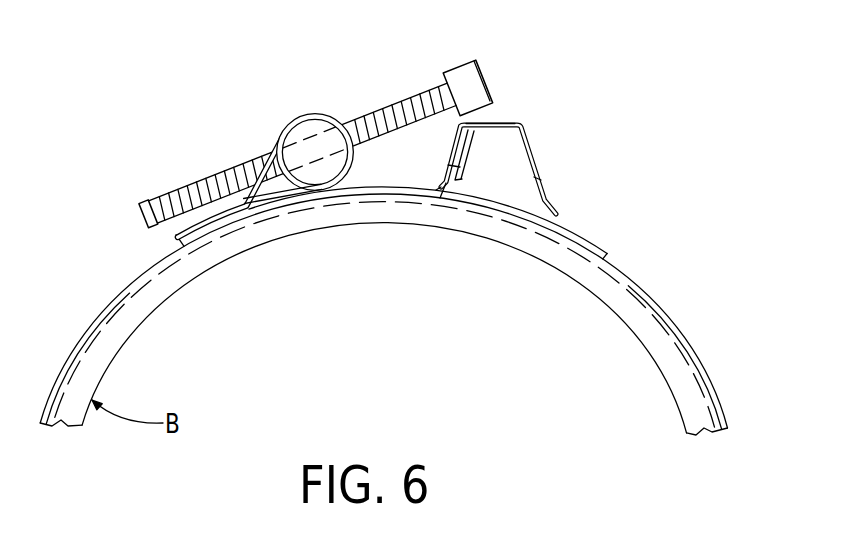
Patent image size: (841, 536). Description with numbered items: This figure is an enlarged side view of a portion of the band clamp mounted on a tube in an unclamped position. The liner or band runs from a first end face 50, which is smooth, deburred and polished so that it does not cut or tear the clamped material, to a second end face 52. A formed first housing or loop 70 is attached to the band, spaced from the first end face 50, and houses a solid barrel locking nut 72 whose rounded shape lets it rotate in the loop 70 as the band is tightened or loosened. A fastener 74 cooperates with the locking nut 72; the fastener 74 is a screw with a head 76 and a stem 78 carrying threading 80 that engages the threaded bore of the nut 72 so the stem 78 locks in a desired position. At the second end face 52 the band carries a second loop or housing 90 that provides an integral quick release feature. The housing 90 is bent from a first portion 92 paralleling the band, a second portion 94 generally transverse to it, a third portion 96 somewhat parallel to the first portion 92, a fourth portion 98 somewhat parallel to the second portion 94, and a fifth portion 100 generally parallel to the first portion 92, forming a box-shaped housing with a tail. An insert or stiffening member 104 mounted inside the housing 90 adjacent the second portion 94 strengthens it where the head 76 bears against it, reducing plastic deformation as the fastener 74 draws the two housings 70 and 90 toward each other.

The first end face 50 is at (657, 325).
The second end face 52 is at (438, 190).
The first housing or loop 70 is at (290, 118).
The barrel locking nut 72 is at (312, 180).
The fastener 74 is at (213, 172).
The head 76 is at (458, 66).
The stem 78 is at (152, 200).
The threading 80 is at (415, 95).
The second loop or housing 90 is at (538, 127).
The first portion 92 is at (522, 207).
The second portion 94 is at (440, 157).
The third portion 96 is at (508, 120).
The fourth portion 98 is at (547, 168).
The fifth portion 100 is at (598, 236).
The insert or stiffening member 104 is at (462, 186).